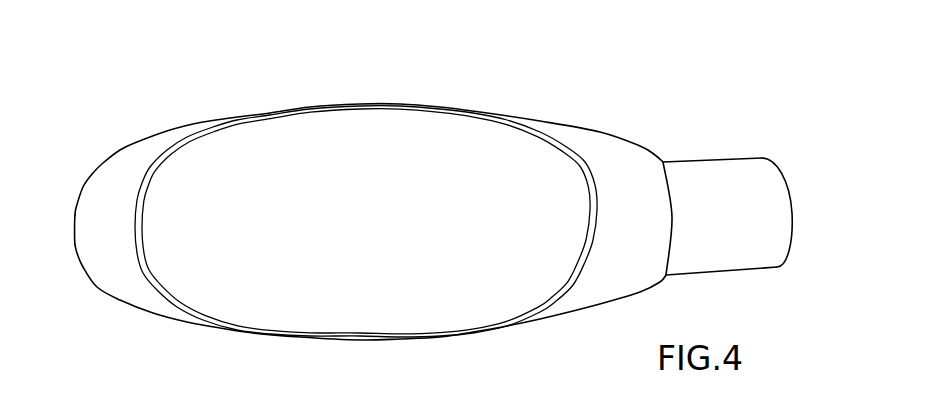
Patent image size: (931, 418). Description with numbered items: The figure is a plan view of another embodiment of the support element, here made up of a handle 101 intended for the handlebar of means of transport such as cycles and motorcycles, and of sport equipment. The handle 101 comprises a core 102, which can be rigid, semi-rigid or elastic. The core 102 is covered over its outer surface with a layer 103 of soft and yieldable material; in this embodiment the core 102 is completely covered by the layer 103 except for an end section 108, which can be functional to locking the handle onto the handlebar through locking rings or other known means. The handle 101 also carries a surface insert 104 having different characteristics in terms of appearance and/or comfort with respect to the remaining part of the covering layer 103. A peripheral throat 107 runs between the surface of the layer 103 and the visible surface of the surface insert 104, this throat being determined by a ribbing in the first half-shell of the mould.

The handle 101 is at (580, 104).
The core 102 is at (703, 210).
The layer of soft and yieldable material 103 is at (120, 183).
The surface insert 104 is at (410, 288).
The peripheral throat 107 is at (503, 117).
The end section 108 is at (767, 197).